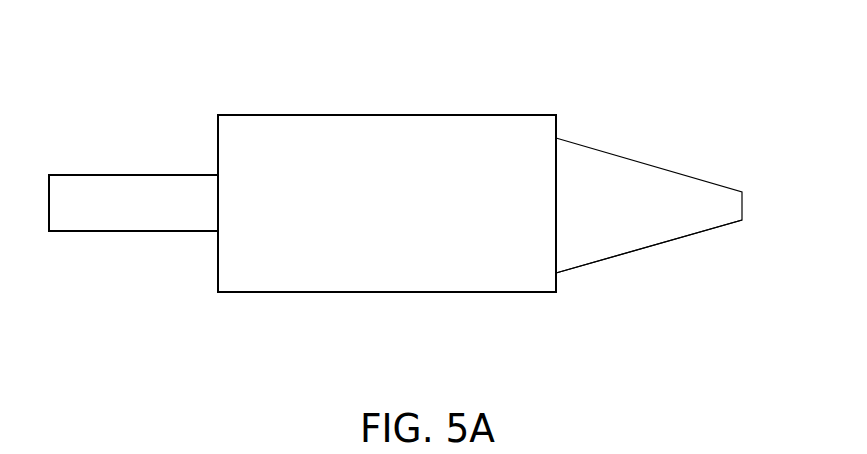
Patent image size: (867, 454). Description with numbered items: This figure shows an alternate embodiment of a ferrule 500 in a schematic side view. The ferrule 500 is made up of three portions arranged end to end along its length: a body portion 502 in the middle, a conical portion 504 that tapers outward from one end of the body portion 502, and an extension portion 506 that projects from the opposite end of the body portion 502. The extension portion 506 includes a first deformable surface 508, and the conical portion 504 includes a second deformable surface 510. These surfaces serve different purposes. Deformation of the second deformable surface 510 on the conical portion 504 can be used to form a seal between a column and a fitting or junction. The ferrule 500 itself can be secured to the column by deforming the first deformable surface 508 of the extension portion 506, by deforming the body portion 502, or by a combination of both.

The ferrule 500 is at (637, 100).
The body portion 502 is at (387, 203).
The conical portion 504 is at (637, 207).
The extension portion 506 is at (133, 202).
The first deformable surface 508 is at (167, 232).
The second deformable surface 510 is at (595, 263).